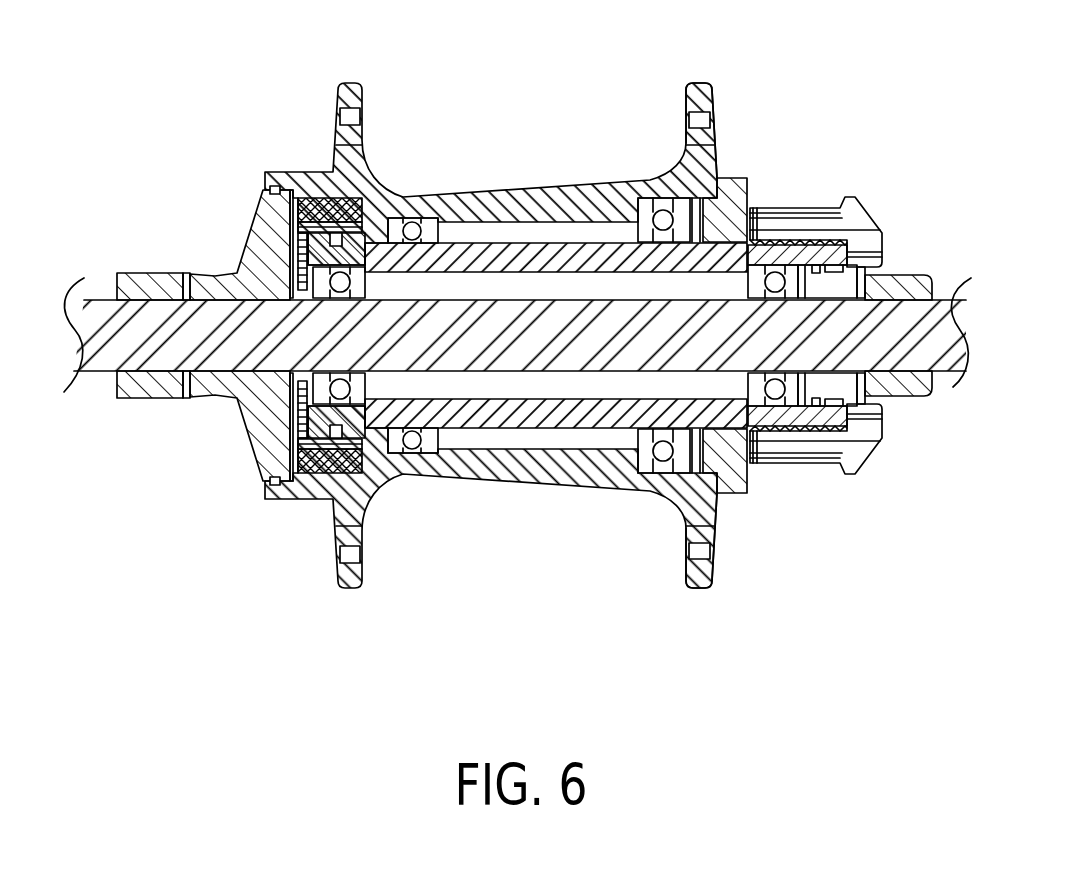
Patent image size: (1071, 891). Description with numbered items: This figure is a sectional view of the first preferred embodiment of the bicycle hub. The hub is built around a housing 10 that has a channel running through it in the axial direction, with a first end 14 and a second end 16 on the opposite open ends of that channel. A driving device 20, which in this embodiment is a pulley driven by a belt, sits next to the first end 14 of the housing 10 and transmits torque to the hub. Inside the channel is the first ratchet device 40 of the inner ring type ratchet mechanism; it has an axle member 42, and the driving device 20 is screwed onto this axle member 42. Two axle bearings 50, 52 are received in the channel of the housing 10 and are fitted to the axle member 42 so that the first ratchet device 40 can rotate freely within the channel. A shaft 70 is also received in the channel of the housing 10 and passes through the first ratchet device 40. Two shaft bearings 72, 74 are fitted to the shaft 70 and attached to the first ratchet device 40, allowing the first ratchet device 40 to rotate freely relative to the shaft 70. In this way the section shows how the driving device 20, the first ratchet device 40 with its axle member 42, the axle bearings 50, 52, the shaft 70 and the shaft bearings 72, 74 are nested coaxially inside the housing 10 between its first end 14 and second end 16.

The housing 10 is at (557, 329).
The first end 14 is at (717, 153).
The second end 16 is at (295, 178).
The driving device 20 is at (863, 435).
The first ratchet device 40 is at (533, 228).
The axle member 42 is at (617, 415).
The axle bearing 50 is at (647, 203).
The axle bearing 52 is at (428, 225).
The shaft 70 is at (182, 345).
The shaft bearing 72 is at (790, 400).
The shaft bearing 74 is at (327, 388).